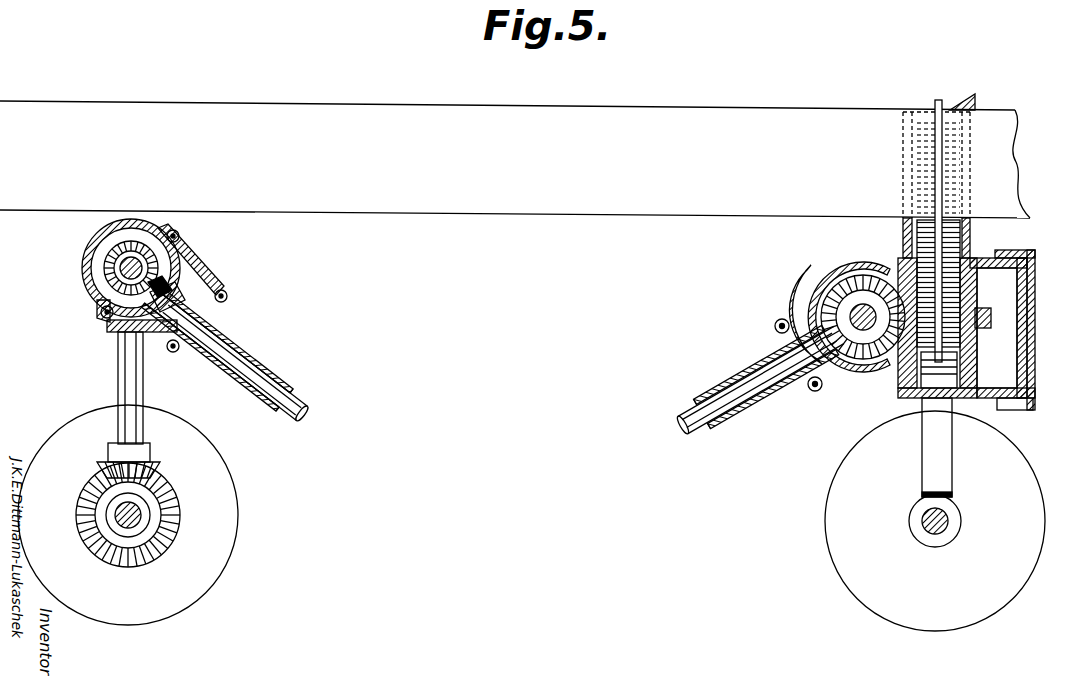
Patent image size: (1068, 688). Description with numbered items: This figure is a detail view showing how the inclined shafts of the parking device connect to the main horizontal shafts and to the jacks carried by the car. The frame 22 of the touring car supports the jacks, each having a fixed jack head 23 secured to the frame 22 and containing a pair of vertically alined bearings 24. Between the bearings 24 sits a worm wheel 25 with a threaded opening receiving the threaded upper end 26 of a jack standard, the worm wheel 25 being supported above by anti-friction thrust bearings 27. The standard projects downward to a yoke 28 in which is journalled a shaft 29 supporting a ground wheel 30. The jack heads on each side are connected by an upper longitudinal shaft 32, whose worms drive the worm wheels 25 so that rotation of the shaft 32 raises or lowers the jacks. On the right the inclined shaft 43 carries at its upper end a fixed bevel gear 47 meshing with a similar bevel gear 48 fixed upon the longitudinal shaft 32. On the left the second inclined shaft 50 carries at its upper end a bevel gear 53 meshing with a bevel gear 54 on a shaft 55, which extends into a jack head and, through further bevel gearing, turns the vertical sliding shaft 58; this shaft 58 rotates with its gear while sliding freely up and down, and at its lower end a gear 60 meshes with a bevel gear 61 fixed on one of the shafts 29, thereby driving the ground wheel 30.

The frame 22 is at (1018, 256).
The jack head 23 is at (1015, 410).
The bearings 24 is at (976, 280).
The worm wheel 25 is at (991, 318).
The threaded upper end 26 is at (903, 236).
The anti-friction thrust bearings 27 is at (862, 270).
The yoke 28 is at (938, 470).
The shaft 29 is at (141, 513).
The ground wheel 30 is at (222, 538).
The upper longitudinal shaft 32 is at (870, 330).
The inclined shaft 43 is at (702, 432).
The bevel gear 47 is at (800, 320).
The bevel gear 48 is at (838, 268).
The inclined shaft 50 is at (304, 400).
The bevel gear 53 is at (196, 264).
The bevel gear 54 is at (112, 282).
The shaft 55 is at (119, 268).
The vertical sliding shaft 58 is at (118, 372).
The gear 60 is at (150, 447).
The bevel gear 61 is at (170, 486).